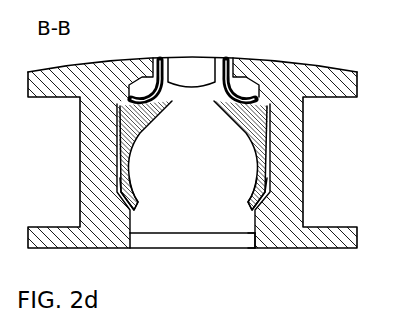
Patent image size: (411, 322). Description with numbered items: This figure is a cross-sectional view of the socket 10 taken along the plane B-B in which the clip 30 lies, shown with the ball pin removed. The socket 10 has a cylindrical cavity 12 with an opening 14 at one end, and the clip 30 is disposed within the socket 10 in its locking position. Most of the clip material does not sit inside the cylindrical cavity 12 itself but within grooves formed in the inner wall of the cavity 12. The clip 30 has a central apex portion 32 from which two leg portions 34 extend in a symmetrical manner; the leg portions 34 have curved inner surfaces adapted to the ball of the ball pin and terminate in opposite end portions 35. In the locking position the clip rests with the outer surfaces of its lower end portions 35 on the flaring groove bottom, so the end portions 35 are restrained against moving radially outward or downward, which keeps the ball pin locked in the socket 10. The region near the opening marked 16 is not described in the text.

The socket 10 is at (304, 60).
The cylindrical cavity 12 is at (152, 220).
The opening 14 is at (213, 238).
The plate edge / connection 16 is at (252, 235).
The clip 30 is at (157, 52).
The central apex portion 32 is at (190, 57).
The leg portions 34 is at (133, 145).
The end portions 35 is at (137, 193).